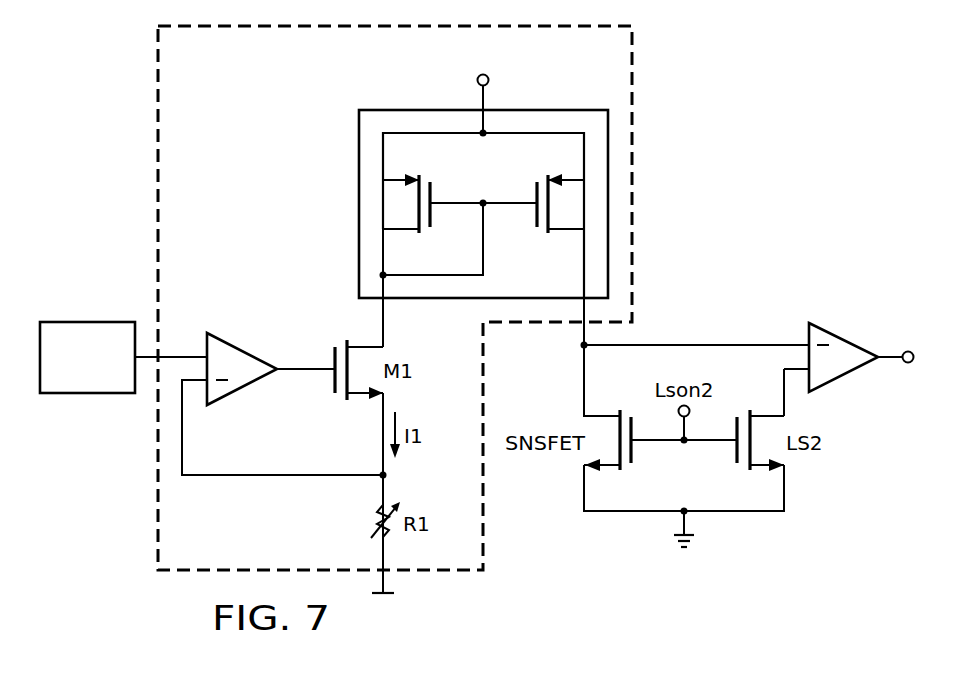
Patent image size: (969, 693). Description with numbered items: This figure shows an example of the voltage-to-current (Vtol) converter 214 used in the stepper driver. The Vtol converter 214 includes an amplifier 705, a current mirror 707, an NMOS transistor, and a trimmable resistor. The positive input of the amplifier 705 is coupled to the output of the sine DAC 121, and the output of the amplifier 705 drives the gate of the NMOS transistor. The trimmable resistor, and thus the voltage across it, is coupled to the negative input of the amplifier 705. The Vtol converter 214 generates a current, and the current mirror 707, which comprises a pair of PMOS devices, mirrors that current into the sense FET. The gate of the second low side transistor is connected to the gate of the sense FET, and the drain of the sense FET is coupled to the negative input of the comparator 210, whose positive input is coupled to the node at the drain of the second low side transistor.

The voltage-to-current (Vtol) converter 214 is at (281, 89).
The current mirror 707 is at (562, 102).
The amplifier 705 is at (246, 349).
The sine DAC 121 is at (88, 394).
The comparator 210 is at (846, 340).